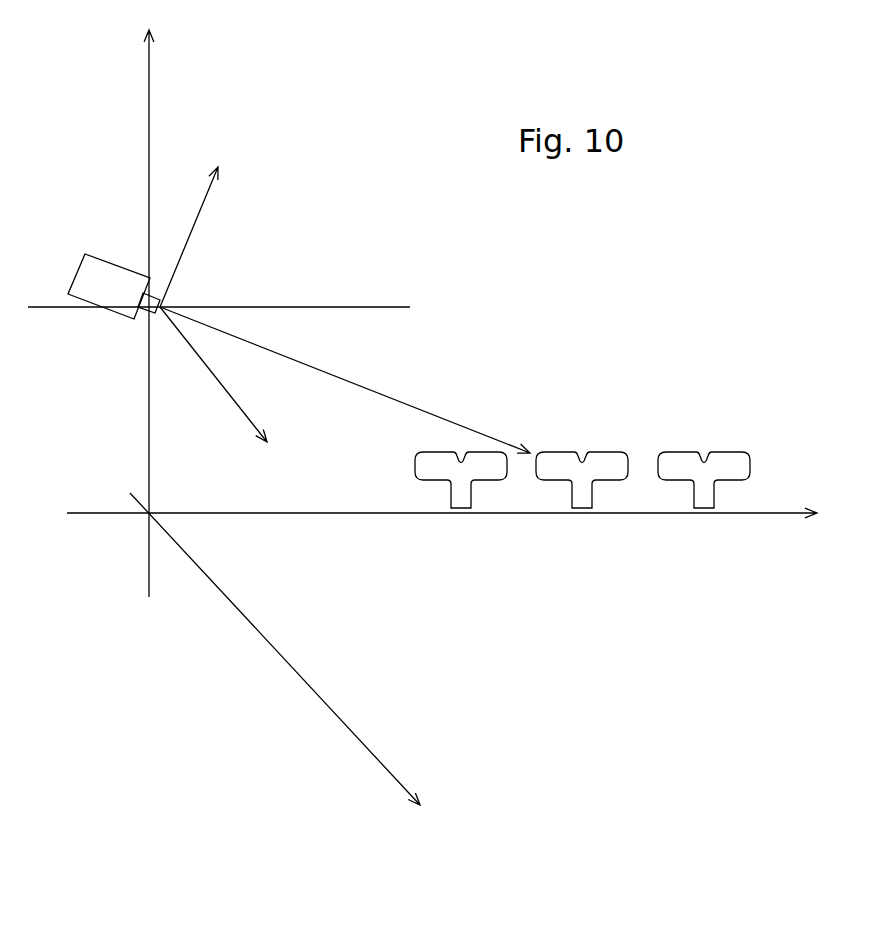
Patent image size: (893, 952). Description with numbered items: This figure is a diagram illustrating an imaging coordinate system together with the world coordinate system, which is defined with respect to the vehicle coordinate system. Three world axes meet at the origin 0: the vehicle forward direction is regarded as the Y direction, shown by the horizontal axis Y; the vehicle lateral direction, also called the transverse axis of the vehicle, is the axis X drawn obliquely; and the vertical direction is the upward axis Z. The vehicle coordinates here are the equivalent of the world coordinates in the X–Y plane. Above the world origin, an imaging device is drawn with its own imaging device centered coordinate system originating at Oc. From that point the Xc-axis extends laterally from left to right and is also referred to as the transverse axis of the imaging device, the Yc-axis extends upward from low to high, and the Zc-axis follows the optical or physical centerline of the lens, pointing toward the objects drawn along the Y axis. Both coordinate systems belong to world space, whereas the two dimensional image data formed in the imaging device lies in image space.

The vertical direction axis Z is at (162, 302).
The vehicle forward direction axis Y is at (442, 530).
The vehicle lateral direction axis X is at (283, 649).
The world coordinate origin 0 is at (135, 524).
The camera coordinate origin / camera Oc is at (219, 300).
The Xc-axis of the imaging coordinate system Xc is at (231, 388).
The Yc-axis of the imaging coordinate system Yc is at (206, 235).
The Zc-axis of the imaging coordinate system Zc is at (351, 380).